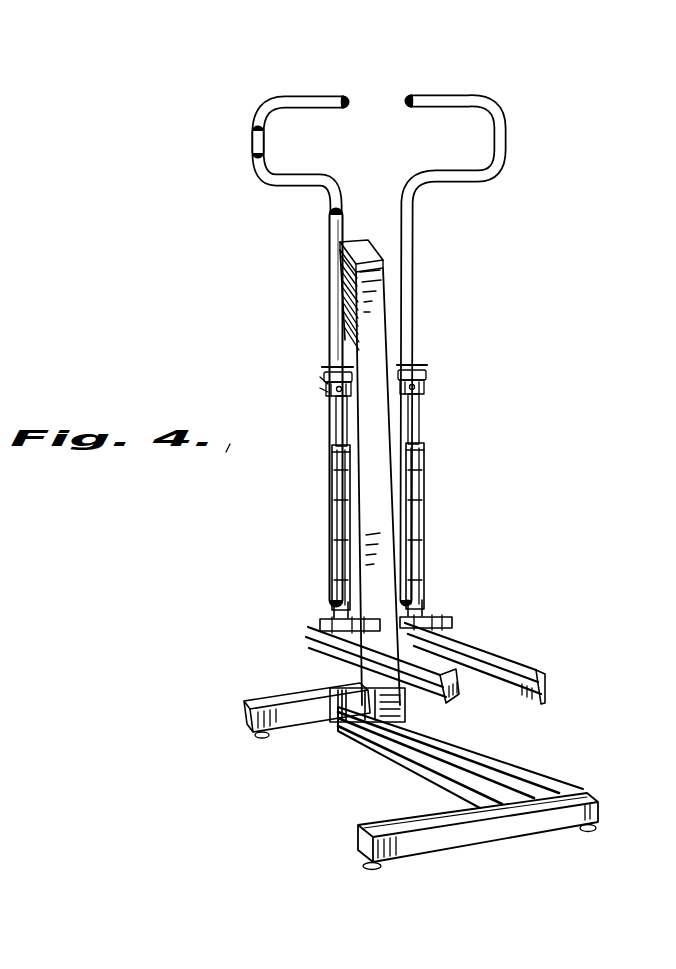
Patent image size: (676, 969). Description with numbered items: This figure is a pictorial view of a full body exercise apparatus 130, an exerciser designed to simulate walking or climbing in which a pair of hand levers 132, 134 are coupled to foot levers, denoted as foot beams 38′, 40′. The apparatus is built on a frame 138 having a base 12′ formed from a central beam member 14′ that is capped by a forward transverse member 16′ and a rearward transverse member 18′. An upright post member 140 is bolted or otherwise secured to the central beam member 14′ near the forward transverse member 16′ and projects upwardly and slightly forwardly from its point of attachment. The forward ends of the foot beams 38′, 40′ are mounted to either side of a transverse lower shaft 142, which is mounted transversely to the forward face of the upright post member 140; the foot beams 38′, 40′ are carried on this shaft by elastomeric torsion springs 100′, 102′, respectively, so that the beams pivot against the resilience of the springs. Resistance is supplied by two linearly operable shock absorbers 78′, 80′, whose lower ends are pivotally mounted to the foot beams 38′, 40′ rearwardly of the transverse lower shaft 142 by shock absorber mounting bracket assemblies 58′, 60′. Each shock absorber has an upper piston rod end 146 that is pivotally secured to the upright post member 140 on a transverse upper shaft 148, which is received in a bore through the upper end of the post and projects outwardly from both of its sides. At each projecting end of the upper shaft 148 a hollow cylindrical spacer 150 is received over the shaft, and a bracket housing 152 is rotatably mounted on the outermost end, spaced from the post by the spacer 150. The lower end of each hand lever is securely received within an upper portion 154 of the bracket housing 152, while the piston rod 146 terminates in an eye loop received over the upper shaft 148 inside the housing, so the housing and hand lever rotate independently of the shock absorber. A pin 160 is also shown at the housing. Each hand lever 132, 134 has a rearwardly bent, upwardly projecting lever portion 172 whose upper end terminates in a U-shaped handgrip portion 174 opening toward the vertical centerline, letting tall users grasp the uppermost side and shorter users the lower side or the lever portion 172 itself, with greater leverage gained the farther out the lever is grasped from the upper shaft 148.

The full body exercise apparatus 130 is at (542, 248).
The hand lever 132 is at (276, 102).
The hand lever 134 is at (463, 104).
The U-shaped handgrip portion 174 is at (256, 145).
The lever portion 172 is at (328, 262).
The upright post member 140 is at (382, 290).
The hollow cylindrical spacer 150 is at (336, 358).
The upper portion of bracket housing 154 is at (335, 360).
The bracket housing 152 is at (320, 377).
The pivot pin 160 is at (318, 415).
The upper piston rod end 146 is at (327, 432).
The transverse upper shaft 148 is at (220, 472).
The shock absorber 78′ is at (338, 507).
The shock absorber 80′ is at (422, 503).
The elastomeric torsion spring 102′ is at (428, 570).
The elastomeric torsion spring 100′ is at (313, 610).
The transverse lower shaft 142 is at (317, 623).
The shock absorber mounting bracket assembly 60′ is at (450, 610).
The foot beam 40′ is at (483, 640).
The shock absorber mounting bracket assembly 58′ is at (340, 647).
The forward transverse member 16′ is at (282, 692).
The foot beam 38′ is at (352, 682).
The frame 138 is at (465, 760).
The central beam member 14′ is at (418, 787).
The base 12′ is at (367, 775).
The rearward transverse member 18′ is at (525, 830).